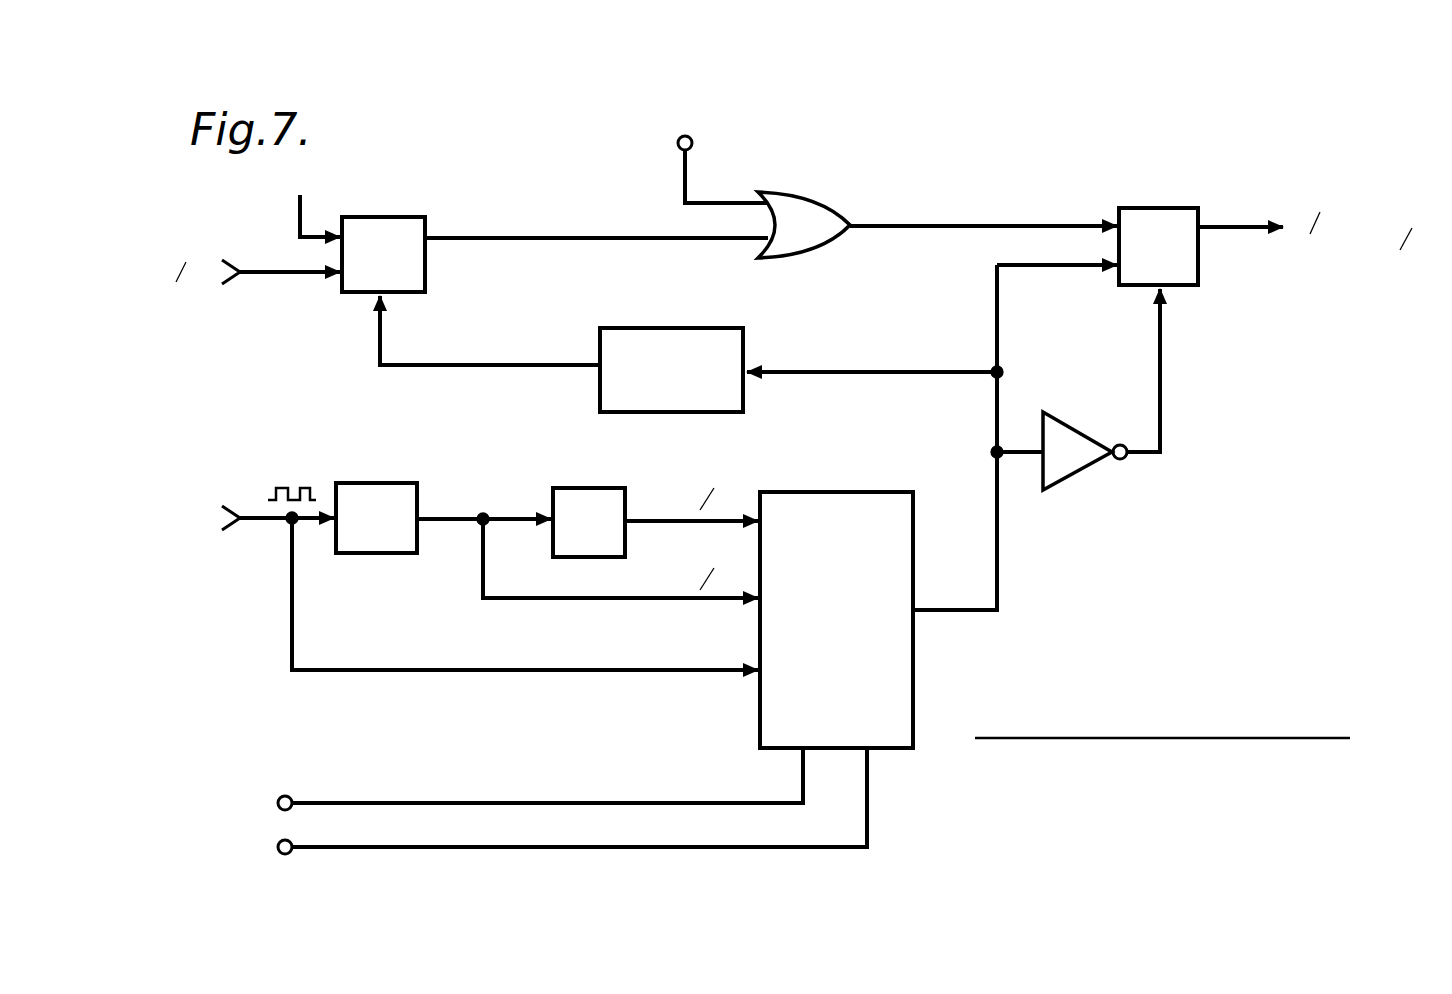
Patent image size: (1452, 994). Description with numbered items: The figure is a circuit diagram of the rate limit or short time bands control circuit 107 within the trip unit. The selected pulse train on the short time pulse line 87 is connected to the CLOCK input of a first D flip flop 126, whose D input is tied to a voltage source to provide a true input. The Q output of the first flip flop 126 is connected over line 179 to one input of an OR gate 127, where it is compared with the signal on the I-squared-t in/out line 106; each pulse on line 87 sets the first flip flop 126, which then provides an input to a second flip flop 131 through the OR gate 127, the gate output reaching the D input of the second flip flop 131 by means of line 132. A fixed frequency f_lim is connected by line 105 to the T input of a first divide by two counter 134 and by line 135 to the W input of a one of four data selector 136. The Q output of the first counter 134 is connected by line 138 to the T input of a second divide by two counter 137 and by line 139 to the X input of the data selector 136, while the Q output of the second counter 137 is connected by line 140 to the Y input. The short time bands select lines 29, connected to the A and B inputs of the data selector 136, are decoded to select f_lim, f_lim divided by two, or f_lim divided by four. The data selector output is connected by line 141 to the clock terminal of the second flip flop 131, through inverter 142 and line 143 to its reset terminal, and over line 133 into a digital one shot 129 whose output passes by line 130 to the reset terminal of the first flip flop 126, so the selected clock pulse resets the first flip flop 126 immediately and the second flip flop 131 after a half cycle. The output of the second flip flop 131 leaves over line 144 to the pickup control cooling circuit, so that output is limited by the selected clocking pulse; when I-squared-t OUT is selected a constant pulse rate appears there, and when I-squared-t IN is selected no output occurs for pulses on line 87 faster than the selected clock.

The first D flip flop 126 is at (390, 217).
The short time pulse line 87 is at (299, 278).
The line 179 is at (584, 226).
The I²tI/O line 106 is at (712, 210).
The OR gate 127 is at (812, 207).
The line 132 is at (1000, 224).
The second flip flop 131 is at (1152, 208).
The line 144 is at (1222, 222).
The digital one shot 129 is at (672, 328).
The line 130 is at (482, 363).
The one shot input line 133 is at (826, 362).
The line 141 is at (997, 548).
The inverter 142 is at (1078, 470).
The line 143 is at (1160, 372).
The line 105 is at (252, 510).
The divide by two counter 134 is at (385, 483).
The line 138 is at (508, 517).
The second divide by two counter 137 is at (588, 488).
The line 140 is at (722, 515).
The line 139 is at (598, 600).
The line 135 is at (430, 672).
The one of four data selector 136 is at (850, 492).
The short time bands select lines 29 is at (628, 846).
The short time bands control circuit 107 is at (1187, 690).